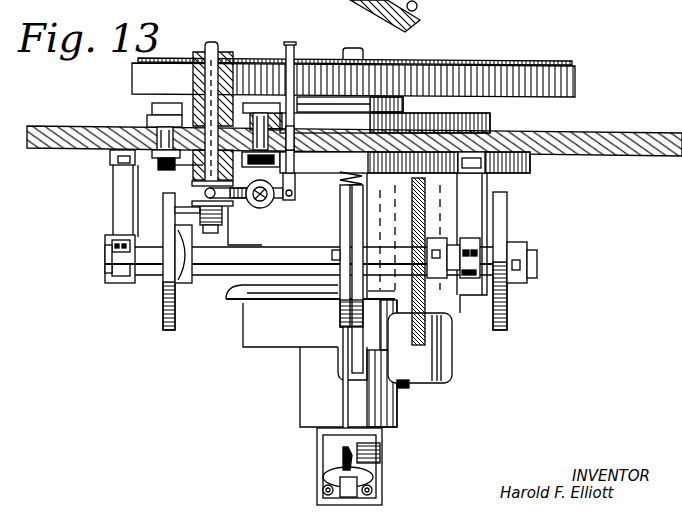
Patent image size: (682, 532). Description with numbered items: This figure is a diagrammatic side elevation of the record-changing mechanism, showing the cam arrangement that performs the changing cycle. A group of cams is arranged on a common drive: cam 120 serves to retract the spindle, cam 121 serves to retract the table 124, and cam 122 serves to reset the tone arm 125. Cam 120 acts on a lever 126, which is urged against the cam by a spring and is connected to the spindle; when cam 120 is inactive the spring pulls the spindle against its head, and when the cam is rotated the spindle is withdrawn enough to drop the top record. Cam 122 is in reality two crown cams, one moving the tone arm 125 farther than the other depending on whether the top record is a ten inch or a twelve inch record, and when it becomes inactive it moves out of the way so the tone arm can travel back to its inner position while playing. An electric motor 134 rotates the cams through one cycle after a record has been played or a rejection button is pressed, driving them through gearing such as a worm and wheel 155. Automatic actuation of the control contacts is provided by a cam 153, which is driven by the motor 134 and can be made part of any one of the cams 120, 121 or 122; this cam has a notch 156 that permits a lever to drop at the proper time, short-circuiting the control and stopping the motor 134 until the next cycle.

The table 124 is at (575, 88).
The tone arm 125 is at (208, 42).
The cam 120 is at (350, 224).
The cam 121 is at (358, 222).
The cam 122 is at (155, 283).
The cam 153 is at (507, 216).
The notch 156 is at (527, 286).
The wheel 155 is at (426, 322).
The electric motor 134 is at (433, 366).
The lever 126 is at (346, 402).